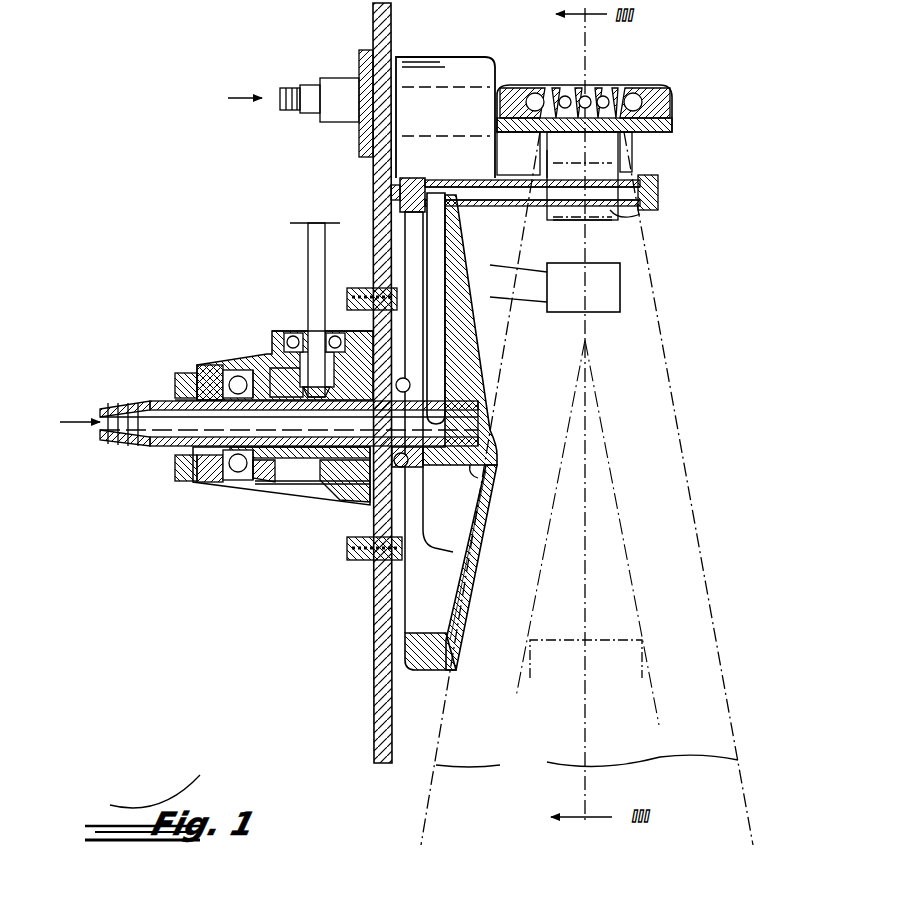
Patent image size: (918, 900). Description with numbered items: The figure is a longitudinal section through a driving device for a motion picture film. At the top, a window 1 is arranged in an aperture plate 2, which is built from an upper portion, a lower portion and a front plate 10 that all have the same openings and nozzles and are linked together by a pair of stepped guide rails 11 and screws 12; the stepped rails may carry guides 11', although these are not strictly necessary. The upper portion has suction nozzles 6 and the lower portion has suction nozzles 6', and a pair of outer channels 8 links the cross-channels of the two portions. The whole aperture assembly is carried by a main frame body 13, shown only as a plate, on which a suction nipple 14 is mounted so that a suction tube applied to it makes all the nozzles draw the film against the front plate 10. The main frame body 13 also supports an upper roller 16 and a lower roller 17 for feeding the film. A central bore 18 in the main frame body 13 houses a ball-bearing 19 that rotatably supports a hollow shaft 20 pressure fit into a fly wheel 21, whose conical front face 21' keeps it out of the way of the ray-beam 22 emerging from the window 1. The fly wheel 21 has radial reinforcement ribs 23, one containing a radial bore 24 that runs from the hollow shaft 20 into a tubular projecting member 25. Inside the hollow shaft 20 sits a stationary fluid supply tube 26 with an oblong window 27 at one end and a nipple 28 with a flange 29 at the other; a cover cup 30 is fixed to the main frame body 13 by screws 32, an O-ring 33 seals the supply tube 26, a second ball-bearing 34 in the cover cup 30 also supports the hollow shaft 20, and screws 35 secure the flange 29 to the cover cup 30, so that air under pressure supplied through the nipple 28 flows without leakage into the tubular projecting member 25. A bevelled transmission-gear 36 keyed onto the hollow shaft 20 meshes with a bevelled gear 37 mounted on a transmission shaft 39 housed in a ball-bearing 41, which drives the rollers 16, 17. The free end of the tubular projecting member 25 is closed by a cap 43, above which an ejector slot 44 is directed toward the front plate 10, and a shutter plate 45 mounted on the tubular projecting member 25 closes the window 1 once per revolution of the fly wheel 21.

The window 1 is at (605, 96).
The aperture plate 2 is at (662, 88).
The suction nozzles 6 is at (594, 76).
The suction nozzles 6' is at (561, 80).
The outer channels 8 is at (535, 93).
The front plate 10 is at (673, 114).
The stepped guide rails 11 is at (635, 166).
The guides 11' is at (616, 164).
The screws 12 is at (634, 155).
The main frame body 13 is at (392, 22).
The suction nipple 14 is at (350, 78).
The upper roller 16 is at (603, 222).
The lower roller 17 is at (622, 296).
The central bore 18 is at (358, 484).
The ball-bearing 19 is at (392, 470).
The hollow shaft 20 is at (300, 478).
The fly wheel 21 is at (467, 441).
The conical front face 21' is at (487, 555).
The ray-beam 22 is at (587, 763).
The radial reinforcement ribs 23 is at (470, 372).
The radial bore 24 is at (452, 334).
The tubular projecting member 25 is at (453, 210).
The stationary fluid supply tube 26 is at (185, 455).
The oblong window 27 is at (437, 428).
The nipple 28 is at (135, 446).
The flange 29 is at (205, 368).
The cover cup 30 is at (318, 483).
The screws 32 is at (362, 288).
The O-ring 33 is at (224, 480).
The second ball-bearing 34 is at (246, 480).
The screws 35 is at (186, 482).
The bevelled transmission-gear 36 is at (280, 500).
The bevelled gear 37 is at (270, 348).
The transmission shaft 39 is at (308, 242).
The ball-bearing 41 is at (290, 332).
The cap 43 is at (660, 203).
The ejector slot 44 is at (660, 180).
The shutter plate 45 is at (645, 214).